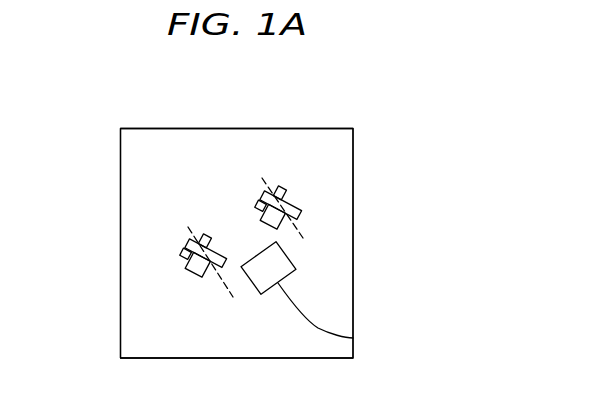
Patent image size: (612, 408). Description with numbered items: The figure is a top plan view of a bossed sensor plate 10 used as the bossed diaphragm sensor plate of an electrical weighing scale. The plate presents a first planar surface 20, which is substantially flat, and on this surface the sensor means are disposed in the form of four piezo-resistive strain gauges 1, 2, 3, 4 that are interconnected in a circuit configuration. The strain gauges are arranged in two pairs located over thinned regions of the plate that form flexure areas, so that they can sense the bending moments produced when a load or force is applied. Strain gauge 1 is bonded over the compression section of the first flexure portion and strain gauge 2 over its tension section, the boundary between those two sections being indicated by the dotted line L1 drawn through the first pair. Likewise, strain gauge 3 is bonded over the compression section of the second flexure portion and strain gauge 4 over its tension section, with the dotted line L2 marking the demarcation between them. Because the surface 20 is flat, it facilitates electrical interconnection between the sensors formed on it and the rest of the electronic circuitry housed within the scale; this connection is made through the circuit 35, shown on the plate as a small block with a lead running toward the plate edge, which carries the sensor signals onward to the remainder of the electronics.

The strain gauge 1 is at (184, 250).
The strain gauge 2 is at (166, 187).
The strain gauge 3 is at (257, 158).
The strain gauge 4 is at (282, 188).
The bossed sensor plate 10 is at (364, 103).
The first planar surface 20 is at (164, 338).
The circuit 35 is at (318, 328).
The dotted line L1 is at (220, 277).
The dotted line L2 is at (293, 228).